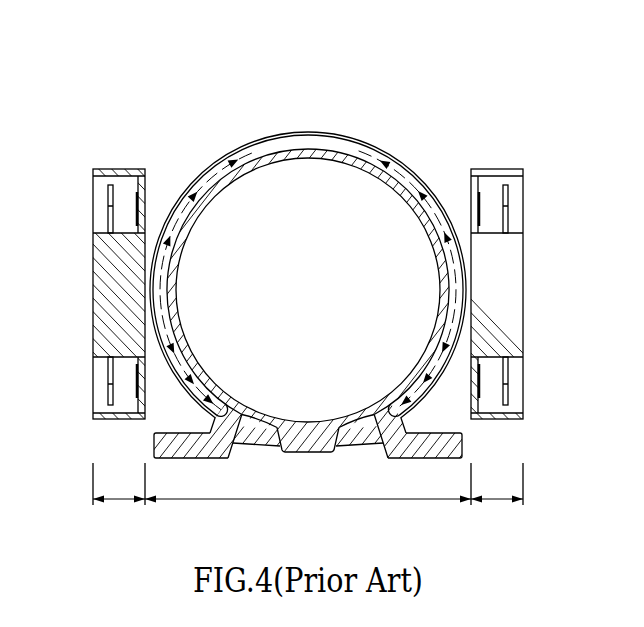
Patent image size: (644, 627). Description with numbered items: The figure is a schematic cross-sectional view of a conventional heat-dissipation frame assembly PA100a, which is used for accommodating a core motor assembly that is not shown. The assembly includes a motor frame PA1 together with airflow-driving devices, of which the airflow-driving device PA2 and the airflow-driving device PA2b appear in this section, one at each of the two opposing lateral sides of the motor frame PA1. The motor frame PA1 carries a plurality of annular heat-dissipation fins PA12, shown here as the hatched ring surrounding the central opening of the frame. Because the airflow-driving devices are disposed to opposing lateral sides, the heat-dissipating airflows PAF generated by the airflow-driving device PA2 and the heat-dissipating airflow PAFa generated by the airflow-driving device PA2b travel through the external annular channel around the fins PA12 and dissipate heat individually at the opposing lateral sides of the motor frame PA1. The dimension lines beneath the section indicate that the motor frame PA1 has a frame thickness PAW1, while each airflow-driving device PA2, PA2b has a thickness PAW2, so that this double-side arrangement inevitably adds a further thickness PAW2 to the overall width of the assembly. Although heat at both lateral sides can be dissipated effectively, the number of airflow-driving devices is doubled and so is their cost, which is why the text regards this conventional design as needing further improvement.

The heat-dissipation frame assembly PA100a is at (437, 100).
The motor frame PA1 is at (243, 133).
The annular heat-dissipation fins PA12 is at (297, 140).
The heat-dissipating airflows PAF is at (402, 167).
The heat-dissipating airflow PAFa is at (217, 167).
The airflow-driving device PA2 is at (523, 203).
The airflow-driving device PA2b is at (93, 203).
The frame thickness PAW1 is at (308, 496).
The thickness PAW2 is at (308, 496).